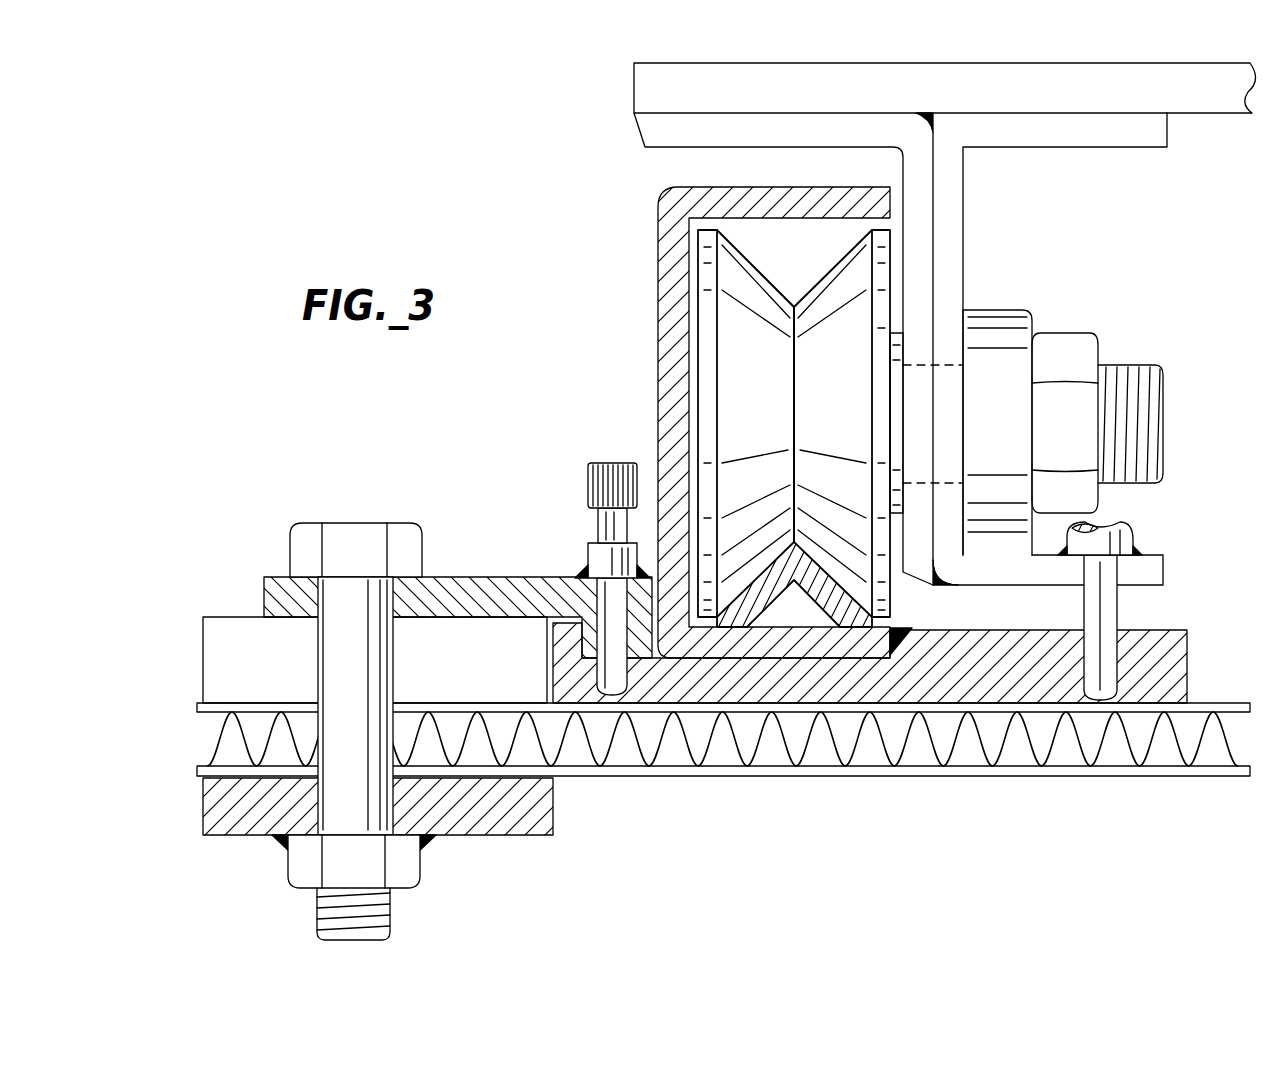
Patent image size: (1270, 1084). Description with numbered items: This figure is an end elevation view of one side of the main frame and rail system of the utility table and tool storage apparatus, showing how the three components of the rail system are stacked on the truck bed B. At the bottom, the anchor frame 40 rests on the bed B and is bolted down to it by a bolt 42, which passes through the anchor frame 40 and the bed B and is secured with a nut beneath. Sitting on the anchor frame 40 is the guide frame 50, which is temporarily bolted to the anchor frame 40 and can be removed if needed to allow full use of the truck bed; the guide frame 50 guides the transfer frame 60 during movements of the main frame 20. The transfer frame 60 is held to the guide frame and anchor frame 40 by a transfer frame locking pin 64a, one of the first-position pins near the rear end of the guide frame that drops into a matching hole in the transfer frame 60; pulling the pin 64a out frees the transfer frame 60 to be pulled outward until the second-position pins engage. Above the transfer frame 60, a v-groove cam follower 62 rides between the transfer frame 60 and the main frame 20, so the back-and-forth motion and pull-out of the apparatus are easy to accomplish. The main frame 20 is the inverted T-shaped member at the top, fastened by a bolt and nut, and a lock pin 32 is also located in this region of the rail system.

The main frame 20 is at (957, 215).
The lock pin 32 is at (1110, 622).
The anchor frame 40 is at (215, 668).
The bolt 42 is at (340, 535).
The guide frame 50 is at (452, 580).
The transfer frame 60 is at (997, 640).
The v-groove cam follower 62 is at (722, 346).
The transfer frame locking pin (first position) 64a is at (617, 678).
The bed B is at (195, 768).